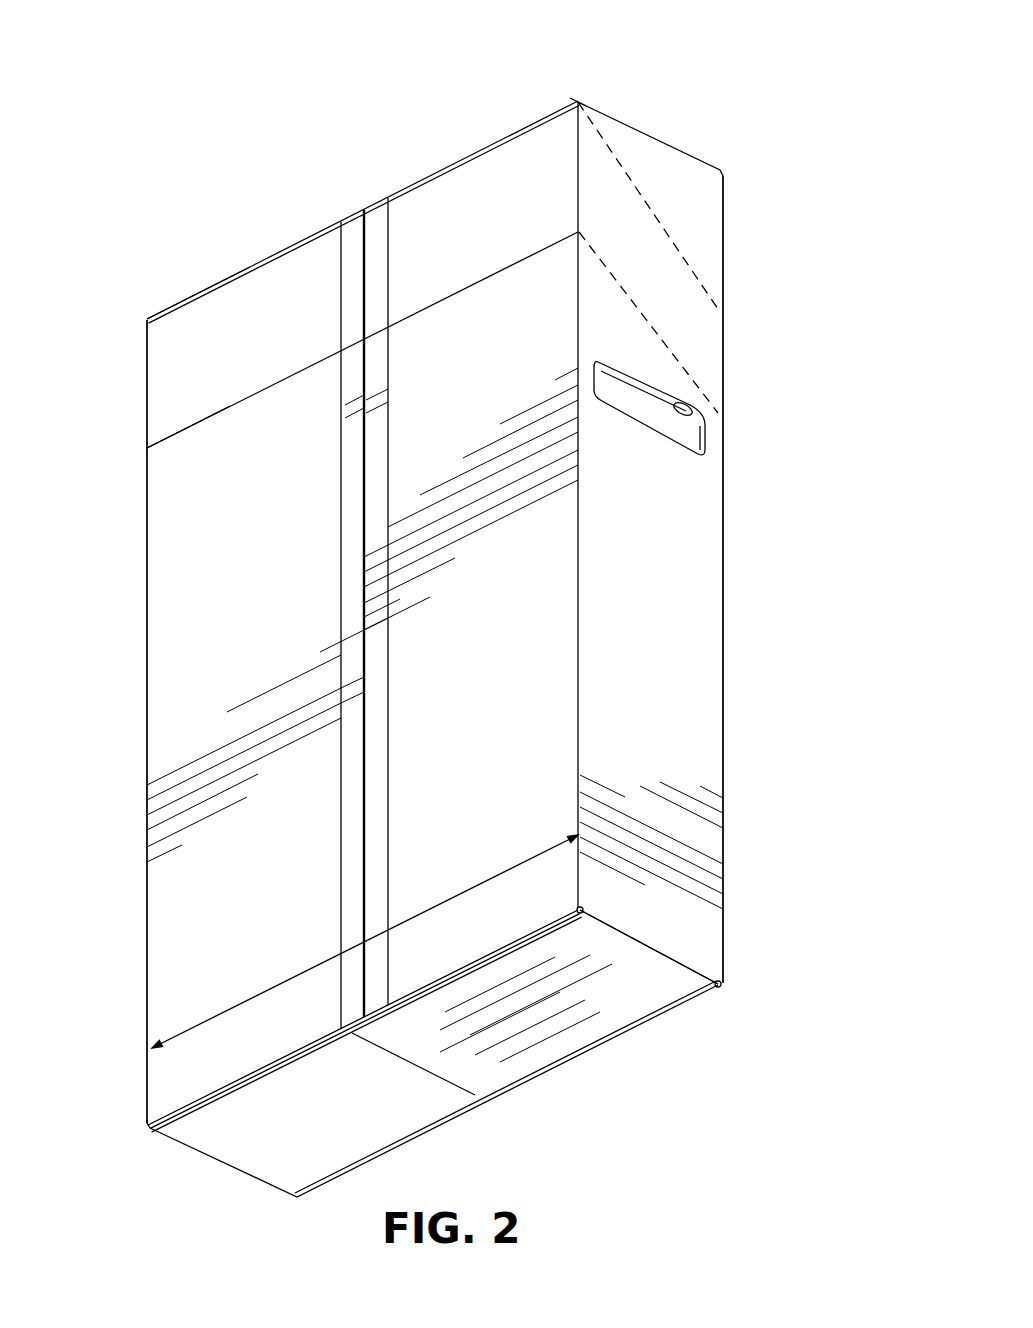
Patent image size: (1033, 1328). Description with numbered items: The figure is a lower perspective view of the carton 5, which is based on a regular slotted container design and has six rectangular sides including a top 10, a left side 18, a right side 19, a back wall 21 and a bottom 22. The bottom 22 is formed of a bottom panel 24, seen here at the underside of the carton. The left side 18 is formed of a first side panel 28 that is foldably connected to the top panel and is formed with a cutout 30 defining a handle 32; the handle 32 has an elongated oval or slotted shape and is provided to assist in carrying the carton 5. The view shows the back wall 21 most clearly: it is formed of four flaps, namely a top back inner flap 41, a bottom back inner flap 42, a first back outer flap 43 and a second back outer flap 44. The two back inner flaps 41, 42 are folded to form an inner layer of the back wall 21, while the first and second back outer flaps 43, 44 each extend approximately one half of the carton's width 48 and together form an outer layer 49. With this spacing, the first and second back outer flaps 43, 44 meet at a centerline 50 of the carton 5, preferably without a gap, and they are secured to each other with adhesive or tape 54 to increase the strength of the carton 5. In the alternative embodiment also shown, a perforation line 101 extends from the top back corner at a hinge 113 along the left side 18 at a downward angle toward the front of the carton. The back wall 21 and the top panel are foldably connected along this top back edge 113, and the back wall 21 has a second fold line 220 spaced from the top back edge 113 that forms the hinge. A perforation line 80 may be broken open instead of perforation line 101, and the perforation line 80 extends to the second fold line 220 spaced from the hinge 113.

The carton 5 is at (222, 216).
The top 10 is at (533, 124).
The top back edge 113 is at (576, 100).
The perforation line 101 is at (660, 222).
The perforation line 80 is at (659, 338).
The second fold line 220 is at (482, 280).
The adhesive or tape 54 is at (340, 310).
The cutout 30 is at (719, 443).
The handle 32 is at (718, 415).
The left side 18 is at (676, 565).
The second back outer flap 44 is at (520, 777).
The first side panel 28 is at (668, 903).
The bottom 22 is at (667, 995).
The bottom panel 24 is at (493, 1047).
The bottom back inner flap 42 is at (163, 1132).
The carton's width 48 is at (240, 1003).
The top back inner flap 41 is at (175, 303).
The outer layer 49 is at (195, 445).
The first back outer flap 43 is at (215, 530).
The right side 19 is at (147, 689).
The centerline 50 is at (363, 722).
The back wall 21 is at (228, 882).